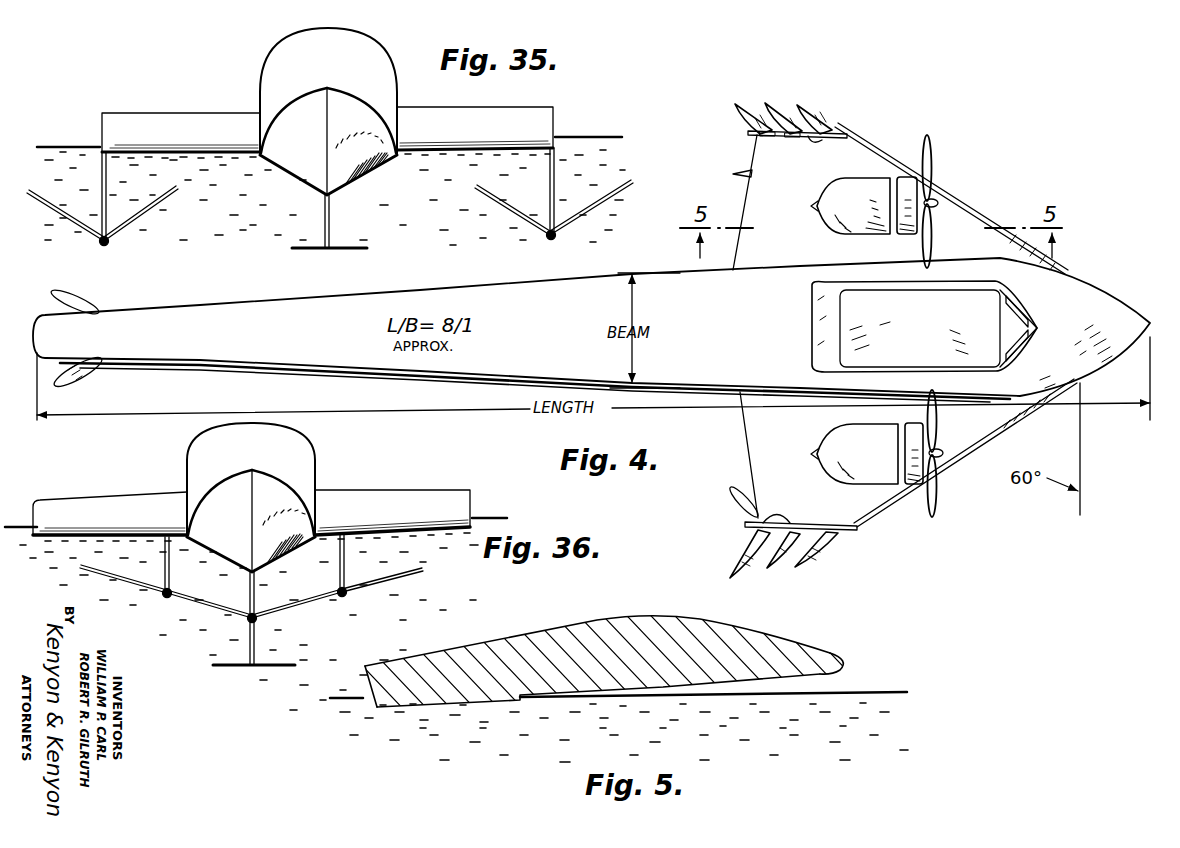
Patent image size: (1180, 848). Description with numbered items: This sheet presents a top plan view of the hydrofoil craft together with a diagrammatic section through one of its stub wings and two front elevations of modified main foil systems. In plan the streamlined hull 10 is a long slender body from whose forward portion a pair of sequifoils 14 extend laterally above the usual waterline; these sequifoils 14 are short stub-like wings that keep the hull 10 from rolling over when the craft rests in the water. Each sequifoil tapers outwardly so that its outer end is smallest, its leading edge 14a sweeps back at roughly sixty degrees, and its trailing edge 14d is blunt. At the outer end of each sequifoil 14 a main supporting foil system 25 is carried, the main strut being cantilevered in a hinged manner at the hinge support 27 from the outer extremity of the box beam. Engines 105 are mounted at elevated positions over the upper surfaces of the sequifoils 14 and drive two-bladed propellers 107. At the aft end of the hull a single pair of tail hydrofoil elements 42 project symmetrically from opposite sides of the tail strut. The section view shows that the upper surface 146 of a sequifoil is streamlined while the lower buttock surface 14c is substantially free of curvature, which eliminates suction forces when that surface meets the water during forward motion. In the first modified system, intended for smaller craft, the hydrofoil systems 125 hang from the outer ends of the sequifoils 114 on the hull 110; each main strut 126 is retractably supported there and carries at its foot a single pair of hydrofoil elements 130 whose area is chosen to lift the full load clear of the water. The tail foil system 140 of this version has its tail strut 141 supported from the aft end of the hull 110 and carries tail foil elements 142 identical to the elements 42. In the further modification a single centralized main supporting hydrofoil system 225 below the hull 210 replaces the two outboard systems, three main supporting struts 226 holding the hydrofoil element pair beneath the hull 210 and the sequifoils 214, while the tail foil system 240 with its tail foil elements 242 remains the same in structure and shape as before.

In FIG. 4, the hull 10 is at (1088, 293).
In FIG. 4, the sequifoils 14 is at (887, 329).
In FIG. 5, the sequifoils 14 is at (607, 674).
In FIG. 4, the leading edges 14a is at (948, 191).
In FIG. 5, the leading edges 14a is at (844, 662).
In FIG. 5, the lower buttock surfaces 14c is at (592, 695).
In FIG. 4, the trailing edge 14d is at (748, 194).
In FIG. 5, the trailing edge 14d is at (367, 690).
In FIG. 4, the main supporting foil system 25 is at (822, 112).
In FIG. 4, the hinge support 27 is at (834, 129).
In FIG. 4, the hydrofoil elements 42 is at (78, 305).
In FIG. 4, the engines 105 is at (832, 222).
In FIG. 4, the propellers 107 is at (934, 162).
In FIG. 35, the hull 110 is at (269, 80).
In FIG. 35, the sequifoils 114 is at (151, 124).
In FIG. 35, the hydrofoil systems 125 is at (128, 204).
In FIG. 35, the main struts 126 is at (102, 190).
In FIG. 35, the hydrofoil elements 130 is at (80, 234).
In FIG. 35, the tail foil system 140 is at (348, 239).
In FIG. 35, the tail strut 141 is at (325, 215).
In FIG. 35, the tail foil elements 142 is at (318, 250).
In FIG. 5, the wing upper surface 146 is at (540, 630).
In FIG. 36, the hull 210 is at (322, 465).
In FIG. 36, the sequifoils 214 is at (101, 503).
In FIG. 36, the main supporting hydrofoil system 225 is at (370, 572).
In FIG. 36, the main supporting struts 226 is at (166, 571).
In FIG. 36, the tail foil system 240 is at (278, 642).
In FIG. 36, the central foil 242 is at (230, 668).